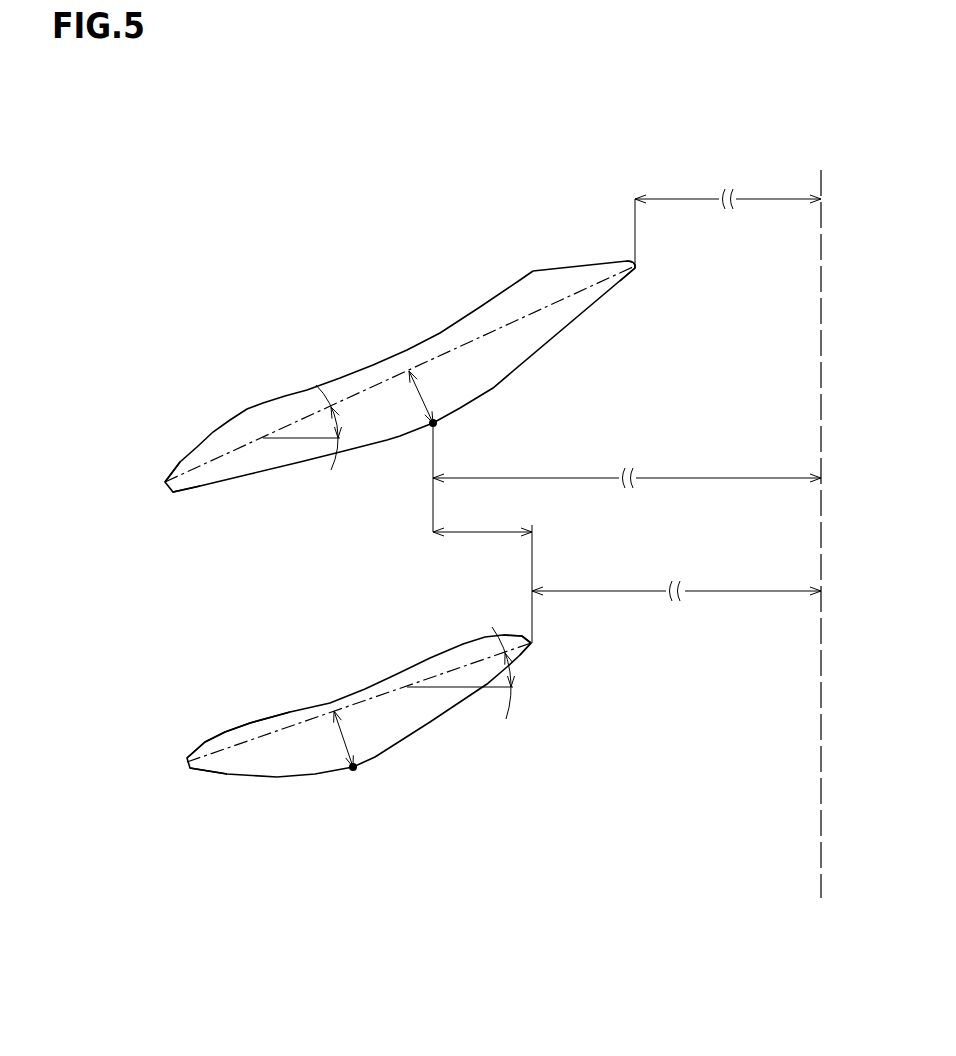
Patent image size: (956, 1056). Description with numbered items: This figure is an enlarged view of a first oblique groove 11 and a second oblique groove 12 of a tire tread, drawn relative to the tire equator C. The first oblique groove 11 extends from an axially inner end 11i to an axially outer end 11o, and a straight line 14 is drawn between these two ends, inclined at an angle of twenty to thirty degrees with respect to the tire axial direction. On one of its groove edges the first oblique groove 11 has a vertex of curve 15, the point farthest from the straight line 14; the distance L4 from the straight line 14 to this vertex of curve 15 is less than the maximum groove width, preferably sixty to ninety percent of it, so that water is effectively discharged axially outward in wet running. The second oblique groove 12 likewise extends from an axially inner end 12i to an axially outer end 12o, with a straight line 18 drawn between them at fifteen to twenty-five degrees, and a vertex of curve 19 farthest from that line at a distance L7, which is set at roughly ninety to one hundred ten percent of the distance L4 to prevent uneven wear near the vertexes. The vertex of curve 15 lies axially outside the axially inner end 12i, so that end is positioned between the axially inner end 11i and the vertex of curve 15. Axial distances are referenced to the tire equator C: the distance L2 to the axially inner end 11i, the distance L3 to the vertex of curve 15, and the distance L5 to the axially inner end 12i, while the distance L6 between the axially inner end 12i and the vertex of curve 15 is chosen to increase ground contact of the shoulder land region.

The first oblique groove 11 is at (502, 357).
The axially inner end of the first oblique groove 11i is at (635, 266).
The axially outer end of the first oblique groove 11o is at (165, 482).
The straight line 14 is at (560, 305).
The vertex of curve 15 is at (432, 427).
The second oblique groove 12 is at (402, 715).
The axially inner end of the second oblique groove 12i is at (531, 643).
The axially outer end of the second oblique groove 12o is at (187, 762).
The straight line 18 is at (258, 737).
The vertex of curve 19 is at (350, 770).
The distance L2 is at (728, 216).
The distance L3 is at (627, 477).
The distance L4 is at (428, 412).
The distance L5 is at (676, 579).
The distance L6 is at (482, 570).
The distance L7 is at (350, 740).
The tire equator C is at (821, 520).